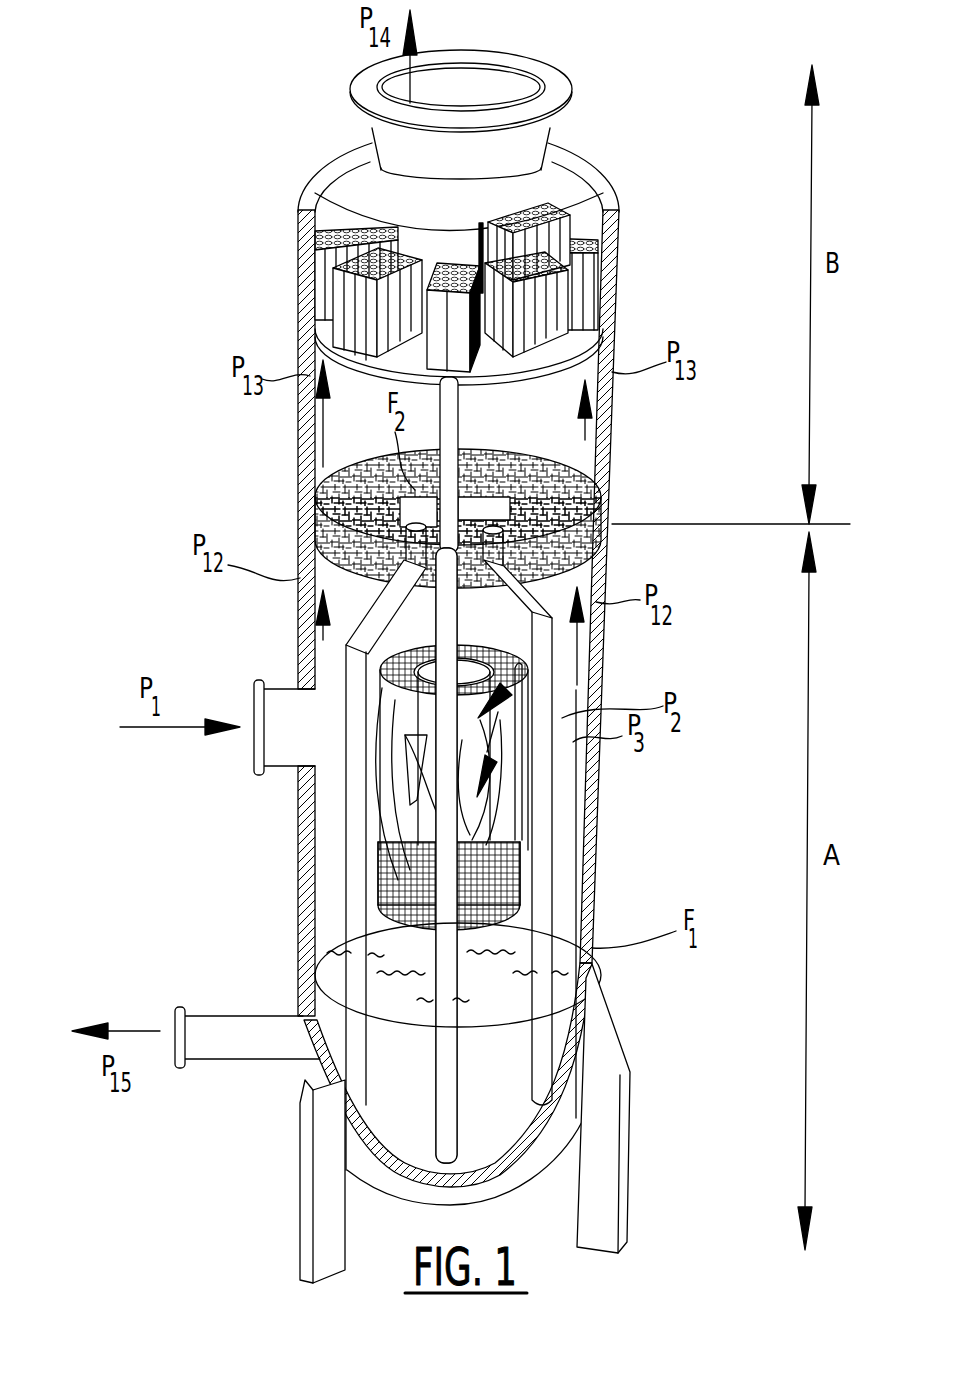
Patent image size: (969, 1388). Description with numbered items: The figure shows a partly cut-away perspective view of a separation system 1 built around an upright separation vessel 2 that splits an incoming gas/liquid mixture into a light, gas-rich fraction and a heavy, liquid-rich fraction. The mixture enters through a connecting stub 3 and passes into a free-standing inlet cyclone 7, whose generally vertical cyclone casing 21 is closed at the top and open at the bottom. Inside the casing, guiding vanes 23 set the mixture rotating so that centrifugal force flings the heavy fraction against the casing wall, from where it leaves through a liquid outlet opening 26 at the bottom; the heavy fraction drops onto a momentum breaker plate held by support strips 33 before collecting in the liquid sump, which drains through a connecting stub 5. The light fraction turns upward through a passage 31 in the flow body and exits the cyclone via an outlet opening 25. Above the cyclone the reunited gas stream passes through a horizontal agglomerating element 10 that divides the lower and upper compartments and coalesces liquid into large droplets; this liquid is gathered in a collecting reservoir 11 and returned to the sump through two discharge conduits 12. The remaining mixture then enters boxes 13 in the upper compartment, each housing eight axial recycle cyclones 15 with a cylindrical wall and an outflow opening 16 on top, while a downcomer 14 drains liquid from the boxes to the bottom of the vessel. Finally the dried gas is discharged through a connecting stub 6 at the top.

The separation system 1 is at (645, 628).
The separation vessel 2 is at (603, 826).
The connecting stub 3 is at (285, 770).
The connecting stub 5 is at (247, 1040).
The connecting stub 6 is at (497, 88).
The inlet cyclone 7 is at (290, 702).
The agglomerating element 10 is at (575, 490).
The collecting reservoir 11 is at (470, 492).
The discharge conduits 12 is at (352, 958).
The boxes 13 is at (640, 266).
The downcomer 14 is at (458, 402).
The cyclones 15 is at (315, 252).
The outflow opening 16 is at (332, 262).
The cyclone casing 21 is at (575, 668).
The guiding vanes 23 is at (513, 832).
The outlet opening 25 is at (442, 678).
The liquid outlet opening 26 is at (545, 852).
The passage 31 is at (462, 655).
The support strips 33 is at (398, 872).